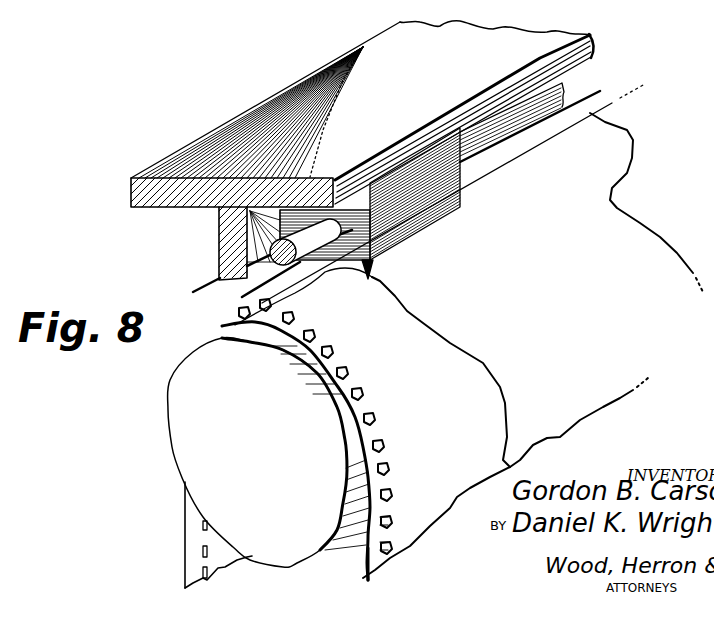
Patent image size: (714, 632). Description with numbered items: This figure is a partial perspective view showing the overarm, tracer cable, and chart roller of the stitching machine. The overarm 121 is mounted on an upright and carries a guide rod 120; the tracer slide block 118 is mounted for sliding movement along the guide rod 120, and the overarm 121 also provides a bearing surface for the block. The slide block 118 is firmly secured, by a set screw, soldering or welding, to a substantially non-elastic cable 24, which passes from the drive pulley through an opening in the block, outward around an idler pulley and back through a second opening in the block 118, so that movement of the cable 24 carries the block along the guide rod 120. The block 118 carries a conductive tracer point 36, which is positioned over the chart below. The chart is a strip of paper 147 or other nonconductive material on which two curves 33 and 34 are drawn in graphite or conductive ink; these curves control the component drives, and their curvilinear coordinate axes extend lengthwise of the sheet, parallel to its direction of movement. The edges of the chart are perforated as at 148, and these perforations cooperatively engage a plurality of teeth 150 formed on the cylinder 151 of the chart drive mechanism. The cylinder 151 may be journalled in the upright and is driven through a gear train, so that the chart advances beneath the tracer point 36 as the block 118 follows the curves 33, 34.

The cable 24 is at (199, 289).
The curve 33 is at (434, 320).
The curve 34 is at (660, 228).
The conductive tracer point 36 is at (376, 272).
The tracer slide block 118 is at (444, 194).
The guide rod 120 is at (510, 124).
The overarm 121 is at (249, 132).
The strip of paper 147 is at (368, 570).
The perforations 148 is at (204, 527).
The teeth 150 is at (331, 349).
The cylinder 151 is at (190, 413).